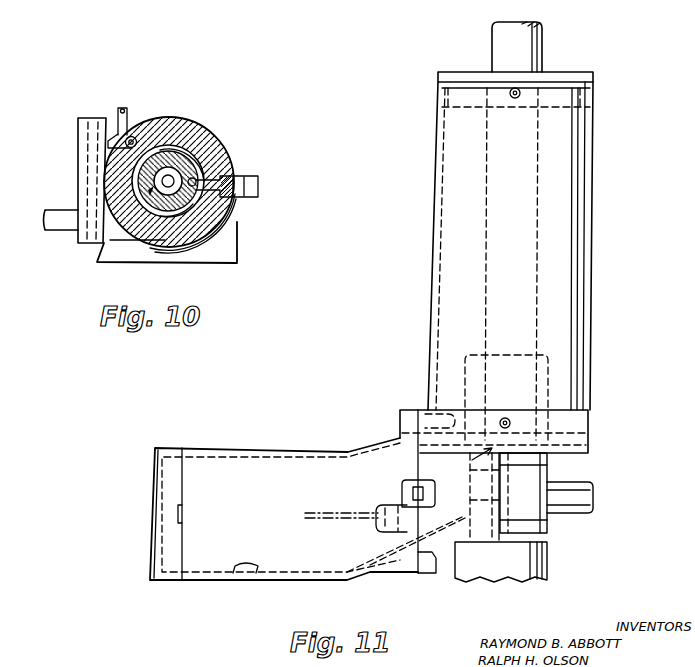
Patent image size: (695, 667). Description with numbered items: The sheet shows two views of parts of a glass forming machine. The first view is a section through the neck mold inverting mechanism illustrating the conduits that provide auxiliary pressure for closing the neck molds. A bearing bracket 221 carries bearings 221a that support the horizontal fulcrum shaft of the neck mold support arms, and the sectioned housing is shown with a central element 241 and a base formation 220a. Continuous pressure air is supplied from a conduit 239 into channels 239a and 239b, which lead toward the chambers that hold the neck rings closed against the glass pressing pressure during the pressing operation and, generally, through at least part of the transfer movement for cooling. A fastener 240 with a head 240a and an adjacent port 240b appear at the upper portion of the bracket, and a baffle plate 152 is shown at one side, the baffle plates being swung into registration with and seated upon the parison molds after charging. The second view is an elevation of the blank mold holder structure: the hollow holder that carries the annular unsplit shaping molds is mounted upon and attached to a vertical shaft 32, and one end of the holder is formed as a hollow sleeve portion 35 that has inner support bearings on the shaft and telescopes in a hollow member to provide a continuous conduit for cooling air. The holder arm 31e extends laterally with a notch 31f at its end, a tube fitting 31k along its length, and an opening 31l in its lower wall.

In FIG. 10, the bearing bracket 221 is at (220, 242).
In FIG. 10, the bearings 221a is at (158, 124).
In FIG. 10, the rotor 241 is at (180, 176).
In FIG. 10, the channel 239a is at (195, 181).
In FIG. 10, the conduit 239 is at (238, 186).
In FIG. 10, the channel 239b is at (173, 140).
In FIG. 10, the port 240b is at (197, 207).
In FIG. 10, the bolt 240 is at (119, 106).
In FIG. 10, the bolt head 240a is at (136, 134).
In FIG. 10, the baffle plates 152 is at (64, 214).
In FIG. 10, the housing base 220a is at (156, 240).
In FIG. 11, the vertical shaft 32 is at (524, 52).
In FIG. 11, the hollow sleeve portion 35 is at (575, 205).
In FIG. 11, the arm 31e is at (152, 516).
In FIG. 11, the notch 31f is at (185, 513).
In FIG. 11, the tube fitting 31k is at (345, 510).
In FIG. 11, the arm bottom opening 31l is at (245, 583).